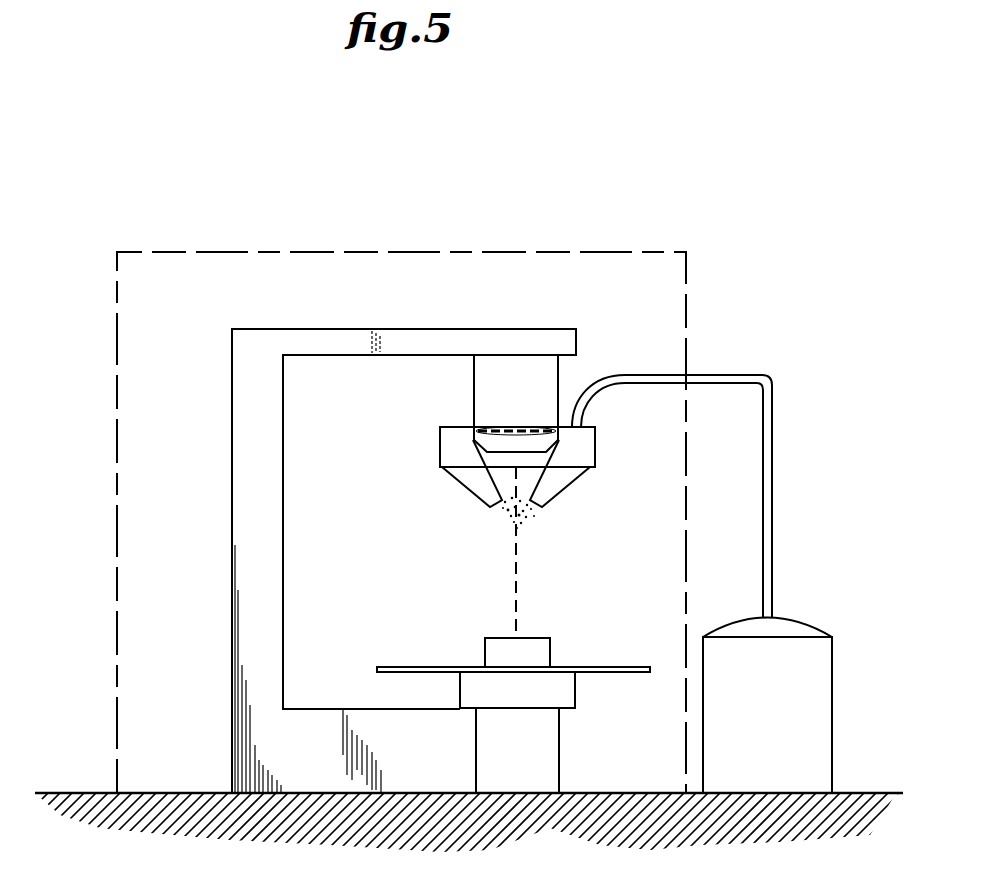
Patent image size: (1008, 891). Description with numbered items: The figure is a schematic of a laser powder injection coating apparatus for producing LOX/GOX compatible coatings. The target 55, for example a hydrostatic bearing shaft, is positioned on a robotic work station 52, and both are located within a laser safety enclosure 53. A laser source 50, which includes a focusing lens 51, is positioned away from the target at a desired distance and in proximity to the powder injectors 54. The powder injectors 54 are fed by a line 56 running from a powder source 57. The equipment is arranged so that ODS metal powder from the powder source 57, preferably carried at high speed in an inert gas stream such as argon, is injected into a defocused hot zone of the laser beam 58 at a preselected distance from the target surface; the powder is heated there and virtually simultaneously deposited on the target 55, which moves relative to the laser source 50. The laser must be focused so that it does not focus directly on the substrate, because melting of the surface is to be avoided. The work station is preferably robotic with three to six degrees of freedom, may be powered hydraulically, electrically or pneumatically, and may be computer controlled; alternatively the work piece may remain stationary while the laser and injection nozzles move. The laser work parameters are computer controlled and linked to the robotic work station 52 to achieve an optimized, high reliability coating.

The laser source 50 is at (543, 374).
The focusing lens 51 is at (496, 430).
The robotic work station 52 is at (597, 619).
The laser safety enclosure 53 is at (405, 251).
The powder injectors 54 is at (470, 483).
The target 55 is at (495, 638).
The line 56 is at (738, 373).
The powder source 57 is at (748, 734).
The defocused hot zone of the laser beam 58 is at (498, 539).